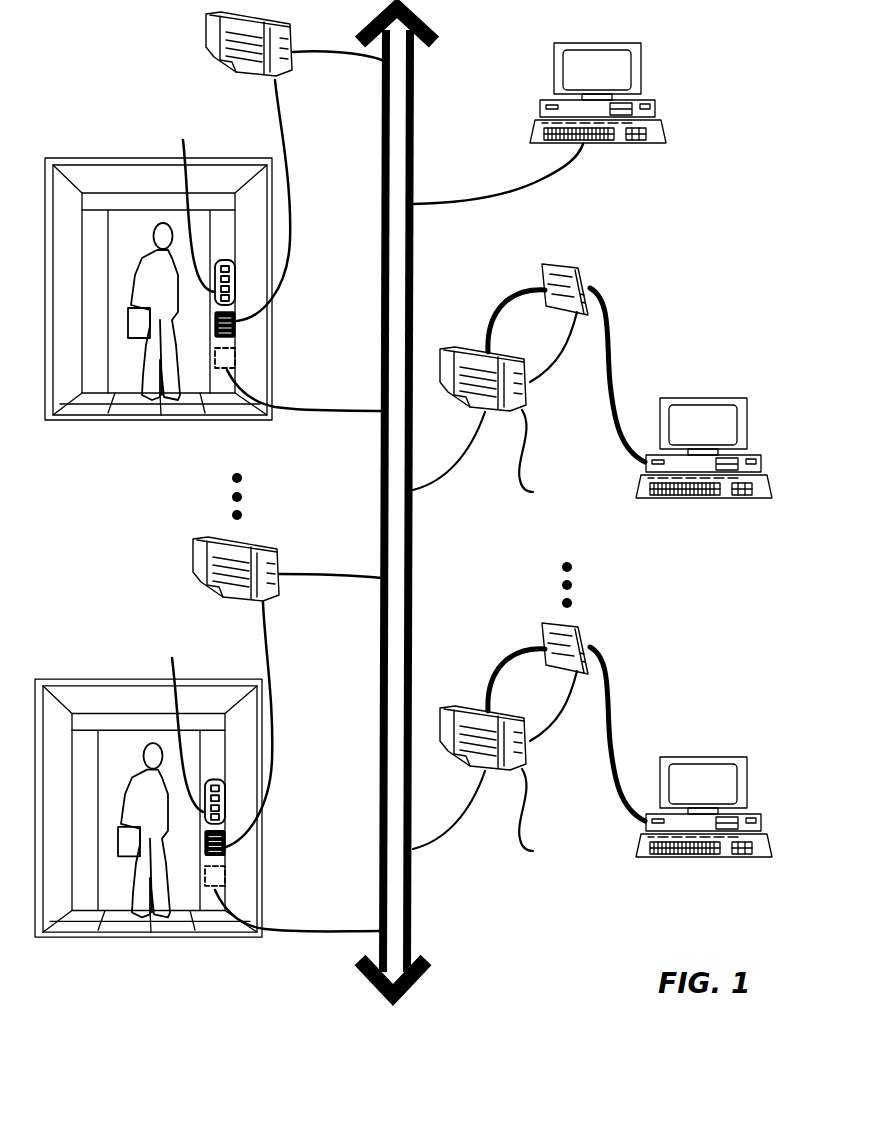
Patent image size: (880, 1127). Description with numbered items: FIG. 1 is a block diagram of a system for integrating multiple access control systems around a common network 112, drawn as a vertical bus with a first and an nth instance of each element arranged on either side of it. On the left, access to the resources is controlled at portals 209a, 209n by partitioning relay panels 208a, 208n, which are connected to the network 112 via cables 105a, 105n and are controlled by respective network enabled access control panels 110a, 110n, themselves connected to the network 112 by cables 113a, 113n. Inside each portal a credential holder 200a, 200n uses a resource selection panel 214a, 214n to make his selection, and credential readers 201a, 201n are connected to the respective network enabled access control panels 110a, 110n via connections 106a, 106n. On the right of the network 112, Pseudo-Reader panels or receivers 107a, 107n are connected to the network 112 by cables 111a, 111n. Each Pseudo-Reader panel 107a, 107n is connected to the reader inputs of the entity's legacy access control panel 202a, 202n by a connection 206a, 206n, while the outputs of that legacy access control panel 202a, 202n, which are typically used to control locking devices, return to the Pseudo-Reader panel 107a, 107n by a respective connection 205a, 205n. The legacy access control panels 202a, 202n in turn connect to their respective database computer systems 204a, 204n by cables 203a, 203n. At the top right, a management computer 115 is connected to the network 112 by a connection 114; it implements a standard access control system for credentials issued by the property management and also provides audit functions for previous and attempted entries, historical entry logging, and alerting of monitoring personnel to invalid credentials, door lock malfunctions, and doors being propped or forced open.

The network 112 is at (416, 110).
The connection 114 is at (462, 198).
The management computer 115 is at (567, 43).
The cable 105a is at (312, 409).
The cable 105n is at (305, 930).
The connection 106a is at (317, 153).
The connection 106n is at (303, 683).
The Pseudo-Reader panel 107a is at (555, 457).
The Pseudo-Reader panel 107n is at (556, 816).
The network enabled access control panel 110a is at (206, 30).
The network enabled access control panel 110n is at (193, 549).
The cable 111a is at (484, 478).
The cable 111n is at (484, 837).
The cable 113a is at (347, 55).
The cable 113n is at (338, 580).
The credential holder 200a is at (158, 402).
The credential holder 200n is at (148, 922).
The credential reader 201a is at (237, 330).
The credential reader 201n is at (227, 851).
The legacy access control panel 202a is at (608, 283).
The legacy access control panel 202n is at (609, 642).
The cable 203a is at (642, 375).
The cable 203n is at (643, 734).
The database computer system 204a is at (704, 466).
The database computer system 204n is at (704, 825).
The connection 205a is at (492, 339).
The connection 205n is at (492, 698).
The connection 206a is at (541, 347).
The connection 206n is at (541, 706).
The partitioning relay panel 208a is at (240, 350).
The partitioning relay panel 208n is at (228, 870).
The portal 209a is at (122, 158).
The portal 209n is at (107, 679).
The resource selection panel 214a is at (180, 213).
The resource selection panel 214n is at (167, 732).